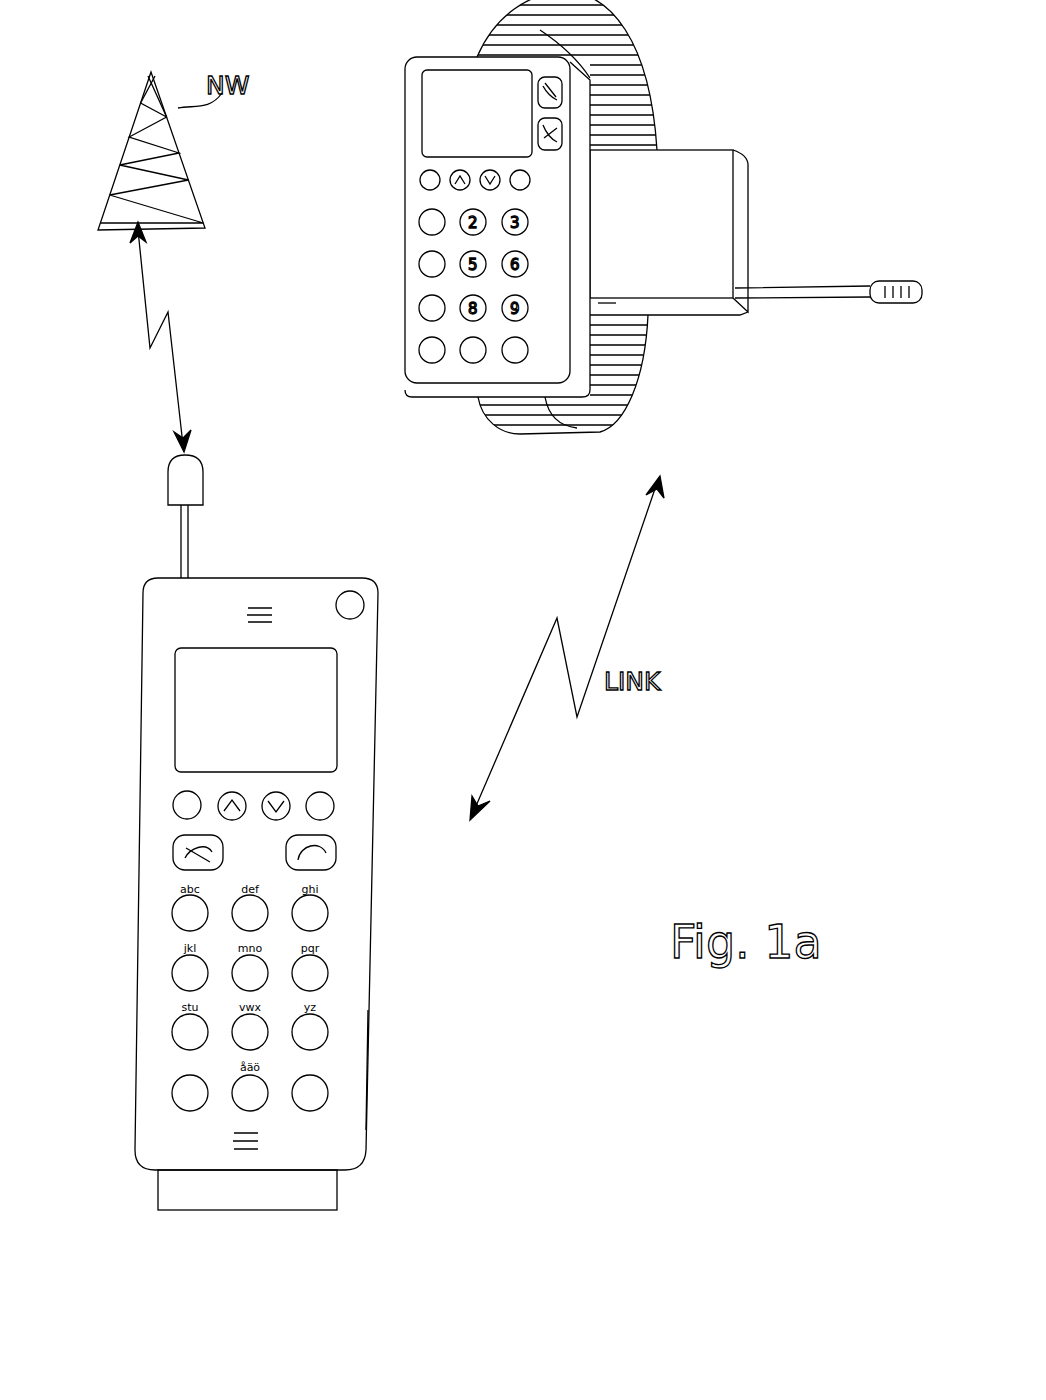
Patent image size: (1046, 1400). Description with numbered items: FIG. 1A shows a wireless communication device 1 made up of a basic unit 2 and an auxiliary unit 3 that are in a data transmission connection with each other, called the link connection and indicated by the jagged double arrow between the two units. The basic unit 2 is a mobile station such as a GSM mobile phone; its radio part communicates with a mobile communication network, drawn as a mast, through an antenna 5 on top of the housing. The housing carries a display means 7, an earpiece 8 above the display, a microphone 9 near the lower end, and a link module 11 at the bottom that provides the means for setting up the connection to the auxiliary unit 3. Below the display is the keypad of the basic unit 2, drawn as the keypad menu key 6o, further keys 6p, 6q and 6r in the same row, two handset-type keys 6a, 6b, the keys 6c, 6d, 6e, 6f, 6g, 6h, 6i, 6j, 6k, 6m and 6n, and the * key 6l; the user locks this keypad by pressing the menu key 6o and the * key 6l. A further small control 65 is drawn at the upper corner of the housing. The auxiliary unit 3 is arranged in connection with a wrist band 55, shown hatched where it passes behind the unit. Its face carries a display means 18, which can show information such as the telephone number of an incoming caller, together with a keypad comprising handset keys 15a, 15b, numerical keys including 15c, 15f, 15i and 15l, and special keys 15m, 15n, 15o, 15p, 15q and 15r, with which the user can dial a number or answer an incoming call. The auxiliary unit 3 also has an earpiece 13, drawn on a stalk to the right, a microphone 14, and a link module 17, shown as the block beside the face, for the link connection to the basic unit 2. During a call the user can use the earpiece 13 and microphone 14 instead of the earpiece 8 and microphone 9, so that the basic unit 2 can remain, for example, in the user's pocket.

The wireless communication device 1 is at (273, 564).
The basic unit 2 is at (368, 1070).
The auxiliary unit 3 is at (793, 192).
The antenna 5 is at (192, 488).
The display means 7 is at (250, 728).
The earpiece 8 is at (250, 612).
The microphone 9 is at (252, 1145).
The link module 11 is at (293, 1195).
The earpiece 13 is at (893, 303).
The microphone 14 is at (600, 305).
The link module 17 is at (692, 300).
The display means 18 is at (440, 90).
The wrist band 55 is at (490, 420).
The power key 65 is at (365, 600).
The call answer key 6a is at (338, 850).
The call end key 6b is at (173, 847).
The key 1 6c is at (175, 905).
The key 2 6d is at (265, 895).
The key 3 6e is at (330, 916).
The key 4 6f is at (172, 970).
The key 5 6g is at (235, 968).
The key 6 6h is at (330, 978).
The key 7 6i is at (172, 1030).
The key 8 6j is at (265, 1018).
The key 9 6k is at (330, 1033).
The * key 6l is at (170, 1092).
The key 0 6m is at (235, 1090).
The hash key 6n is at (327, 1100).
The keypad menu key 6o is at (173, 803).
The scroll up key 6p is at (240, 793).
The scroll down key 6q is at (280, 793).
The OK key 6r is at (330, 795).
The handset key 15a is at (560, 88).
The handset key 15b is at (566, 128).
The numerical key 15c is at (420, 222).
The numerical key 15f is at (420, 262).
The numerical key 15i is at (420, 305).
The numerical key 15l is at (418, 348).
The special key 15m is at (472, 364).
The special key 15n is at (519, 362).
The special key 15o is at (420, 180).
The special key 15p is at (453, 173).
The special key 15q is at (490, 170).
The special key 15r is at (530, 180).